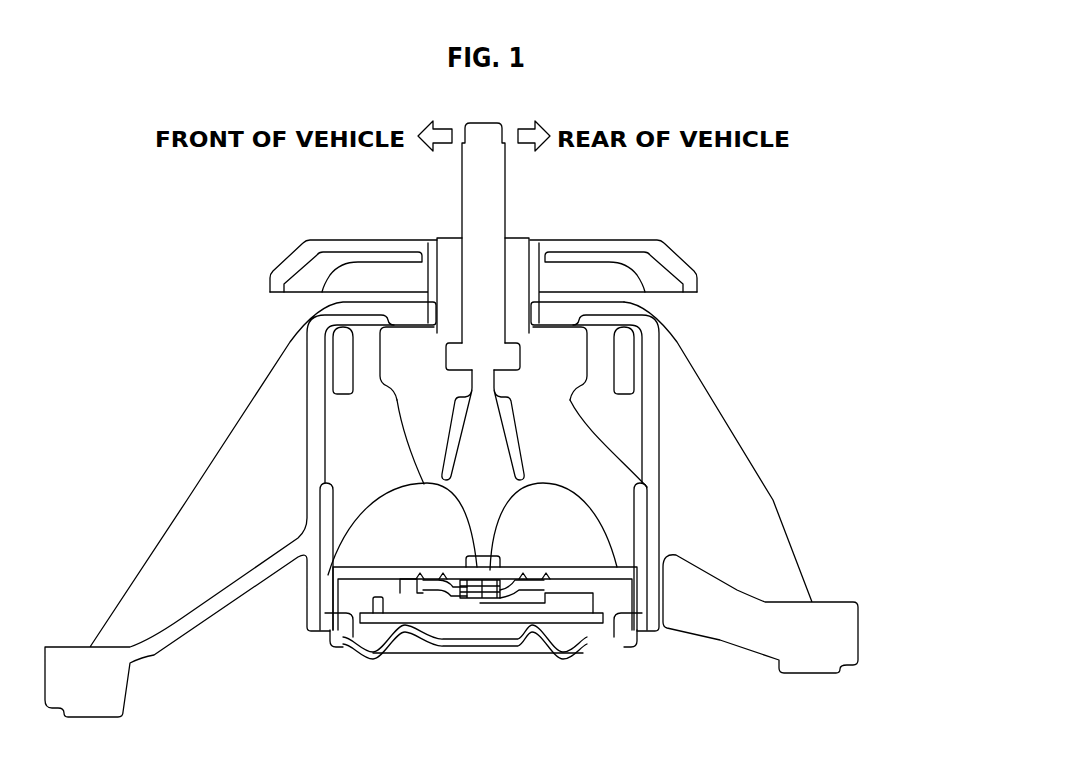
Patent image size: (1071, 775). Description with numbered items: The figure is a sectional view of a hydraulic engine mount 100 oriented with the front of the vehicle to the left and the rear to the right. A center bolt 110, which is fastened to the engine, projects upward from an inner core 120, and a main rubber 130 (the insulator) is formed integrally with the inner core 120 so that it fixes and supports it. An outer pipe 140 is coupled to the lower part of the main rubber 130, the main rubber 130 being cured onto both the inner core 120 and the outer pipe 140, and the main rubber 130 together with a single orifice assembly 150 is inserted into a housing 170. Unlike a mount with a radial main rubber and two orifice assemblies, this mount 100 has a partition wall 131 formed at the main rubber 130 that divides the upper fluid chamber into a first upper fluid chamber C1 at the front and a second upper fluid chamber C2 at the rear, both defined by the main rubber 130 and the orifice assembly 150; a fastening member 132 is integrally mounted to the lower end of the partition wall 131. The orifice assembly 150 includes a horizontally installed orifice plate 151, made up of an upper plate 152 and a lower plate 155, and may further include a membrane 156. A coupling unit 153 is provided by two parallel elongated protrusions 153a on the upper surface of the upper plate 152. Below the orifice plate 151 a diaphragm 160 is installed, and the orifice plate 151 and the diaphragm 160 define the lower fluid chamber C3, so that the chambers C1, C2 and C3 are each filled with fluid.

The mount 100 is at (783, 352).
The center bolt 110 is at (490, 192).
The inner core 120 is at (562, 347).
The main rubber 130 is at (640, 463).
The partition wall 131 is at (525, 560).
The fastening member 132 is at (480, 560).
The outer pipe 140 is at (290, 527).
The orifice assembly 150 is at (340, 480).
The orifice plate 151 is at (622, 631).
The upper plate 152 is at (600, 570).
The coupling unit 153 is at (281, 485).
The elongated protrusion 153a is at (380, 561).
The lower plate 155 is at (623, 593).
The membrane 156 is at (420, 587).
The diaphragm 160 is at (367, 653).
The housing 170 is at (660, 363).
The first upper fluid chamber C1 is at (425, 487).
The second upper fluid chamber C2 is at (545, 490).
The lower fluid chamber C3 is at (540, 633).